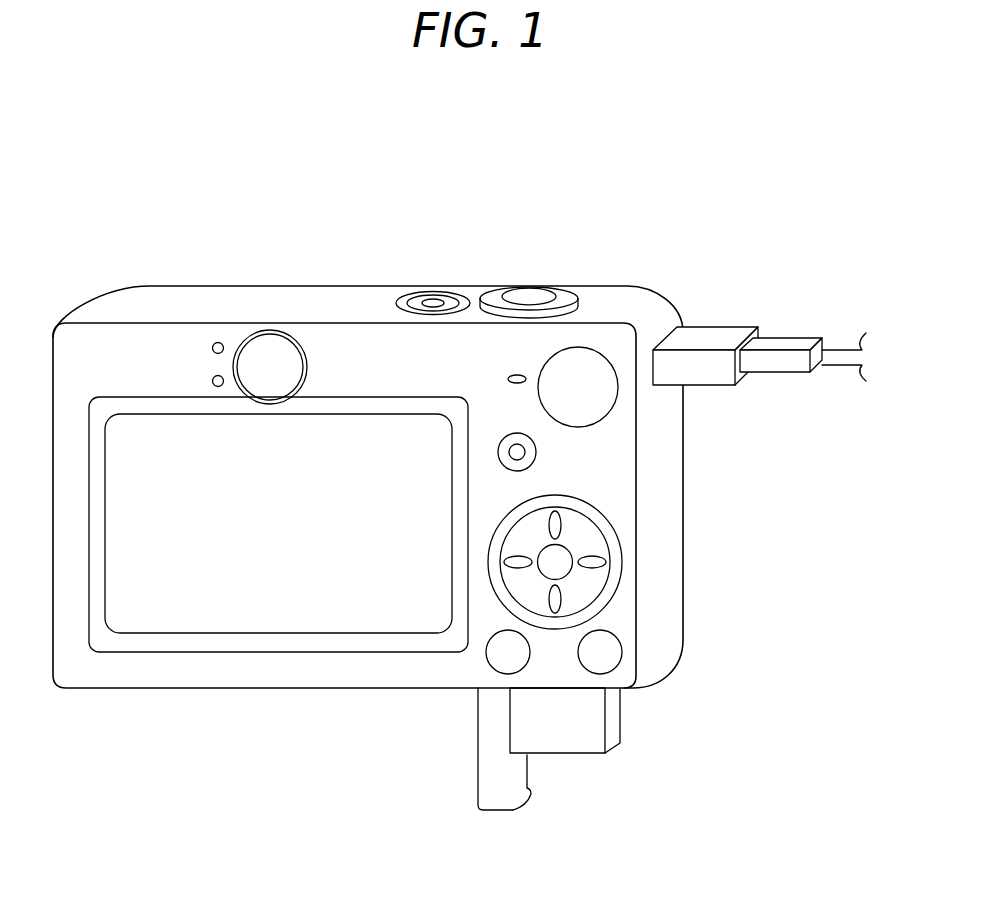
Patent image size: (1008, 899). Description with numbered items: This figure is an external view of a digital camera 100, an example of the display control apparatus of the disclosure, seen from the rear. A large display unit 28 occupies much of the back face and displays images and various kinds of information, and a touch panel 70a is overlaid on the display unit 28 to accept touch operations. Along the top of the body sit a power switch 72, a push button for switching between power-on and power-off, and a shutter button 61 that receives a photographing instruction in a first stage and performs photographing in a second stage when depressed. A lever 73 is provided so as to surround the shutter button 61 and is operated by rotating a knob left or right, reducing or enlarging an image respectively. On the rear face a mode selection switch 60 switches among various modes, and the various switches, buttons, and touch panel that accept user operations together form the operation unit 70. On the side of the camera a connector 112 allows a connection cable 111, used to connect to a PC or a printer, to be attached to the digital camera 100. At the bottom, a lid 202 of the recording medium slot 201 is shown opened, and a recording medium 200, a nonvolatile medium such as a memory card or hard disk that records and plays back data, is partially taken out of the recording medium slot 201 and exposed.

The digital camera 100 is at (146, 742).
The display unit 28 is at (278, 416).
The touch panel 70a is at (183, 435).
The power switch 72 is at (435, 299).
The lever 73 is at (527, 292).
The shutter button 61 is at (534, 229).
The mode selection switch 60 is at (592, 360).
The operation unit 70 is at (556, 320).
The connector 112 is at (700, 337).
The connection cable 111 is at (778, 345).
The recording medium 200 is at (582, 733).
The recording medium slot 201 is at (523, 689).
The lid 202 is at (512, 773).